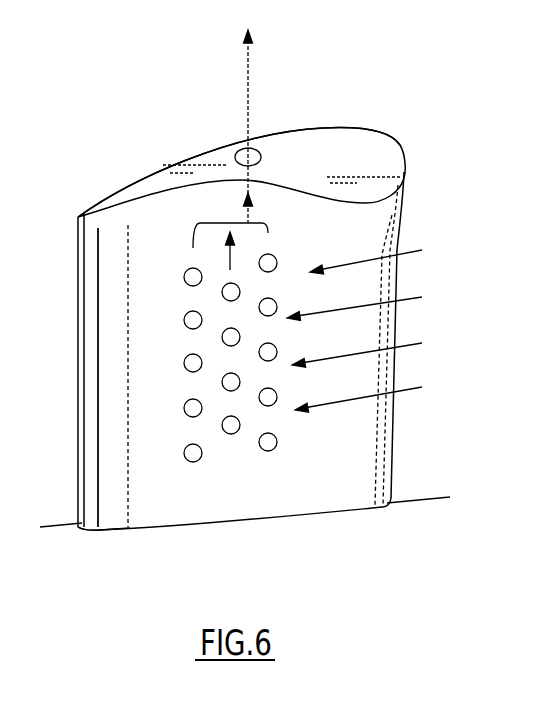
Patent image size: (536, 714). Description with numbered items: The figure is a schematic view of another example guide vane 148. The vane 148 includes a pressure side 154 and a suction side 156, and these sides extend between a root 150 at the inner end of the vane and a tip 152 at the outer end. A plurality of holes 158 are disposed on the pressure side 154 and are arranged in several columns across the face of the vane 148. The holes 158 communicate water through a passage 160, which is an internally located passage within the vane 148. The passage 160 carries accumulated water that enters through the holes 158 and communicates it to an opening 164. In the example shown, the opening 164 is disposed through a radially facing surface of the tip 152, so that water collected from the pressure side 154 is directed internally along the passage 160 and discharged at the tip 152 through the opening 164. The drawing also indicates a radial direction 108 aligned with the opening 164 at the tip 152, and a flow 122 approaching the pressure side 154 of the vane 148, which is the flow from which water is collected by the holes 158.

The radial direction axis 108 is at (250, 78).
The hot gas flow 122 is at (430, 243).
The vane 148 is at (163, 123).
The root 150 is at (115, 512).
The tip 152 is at (128, 172).
The pressure side 154 is at (110, 425).
The suction side 156 is at (350, 115).
The holes 158 is at (185, 403).
The passage 160 is at (300, 228).
The opening 164 is at (278, 154).